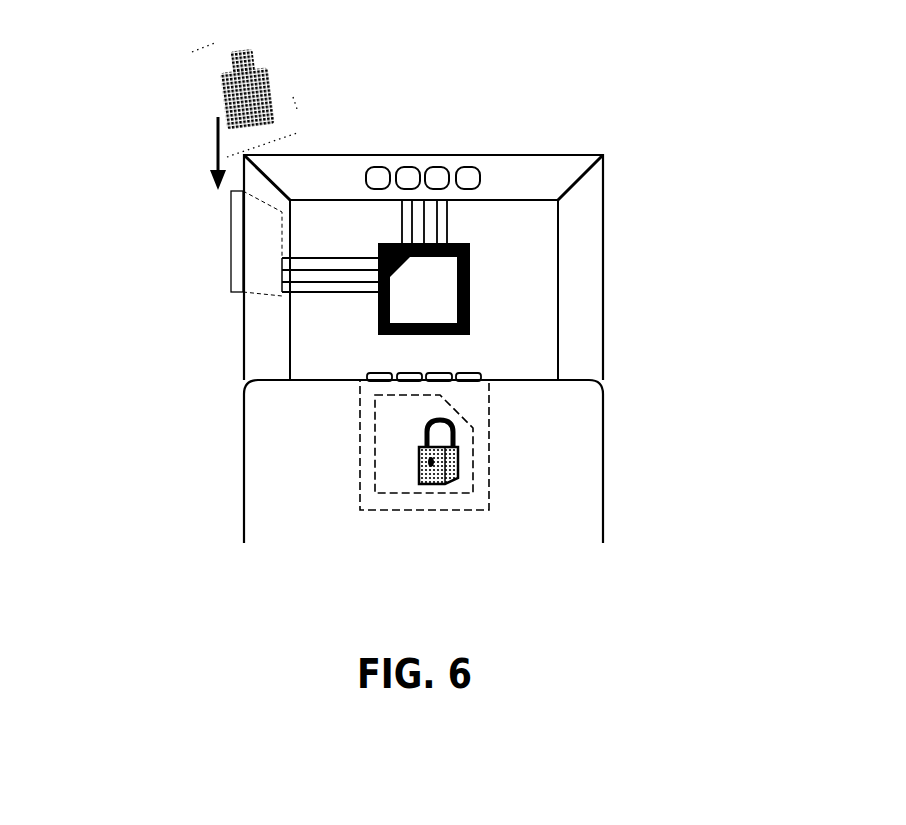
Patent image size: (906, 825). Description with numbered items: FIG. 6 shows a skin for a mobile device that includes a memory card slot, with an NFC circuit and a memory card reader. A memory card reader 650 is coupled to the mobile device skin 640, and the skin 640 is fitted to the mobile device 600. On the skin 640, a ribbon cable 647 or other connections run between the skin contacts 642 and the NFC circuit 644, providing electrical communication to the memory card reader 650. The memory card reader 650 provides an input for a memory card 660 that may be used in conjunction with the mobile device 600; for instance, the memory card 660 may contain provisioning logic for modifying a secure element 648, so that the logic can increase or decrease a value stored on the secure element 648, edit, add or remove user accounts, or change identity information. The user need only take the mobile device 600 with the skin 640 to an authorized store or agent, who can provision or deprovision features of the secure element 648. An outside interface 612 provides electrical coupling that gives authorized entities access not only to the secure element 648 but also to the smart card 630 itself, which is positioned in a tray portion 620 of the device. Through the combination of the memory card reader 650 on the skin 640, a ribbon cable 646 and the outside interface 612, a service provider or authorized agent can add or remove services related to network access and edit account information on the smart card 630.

The mobile device 600 is at (250, 442).
The outside interface 612 is at (458, 373).
The tray portion 620 is at (489, 505).
The smart card 630 is at (385, 473).
The mobile device skin 640 is at (598, 332).
The skin contacts 642 is at (470, 180).
The NFC circuit 644 is at (470, 248).
The ribbon cable 646 is at (445, 230).
The ribbon cable 647 is at (320, 283).
The secure element 648 is at (453, 445).
The memory card reader 650 is at (233, 255).
The memory card 660 is at (222, 77).